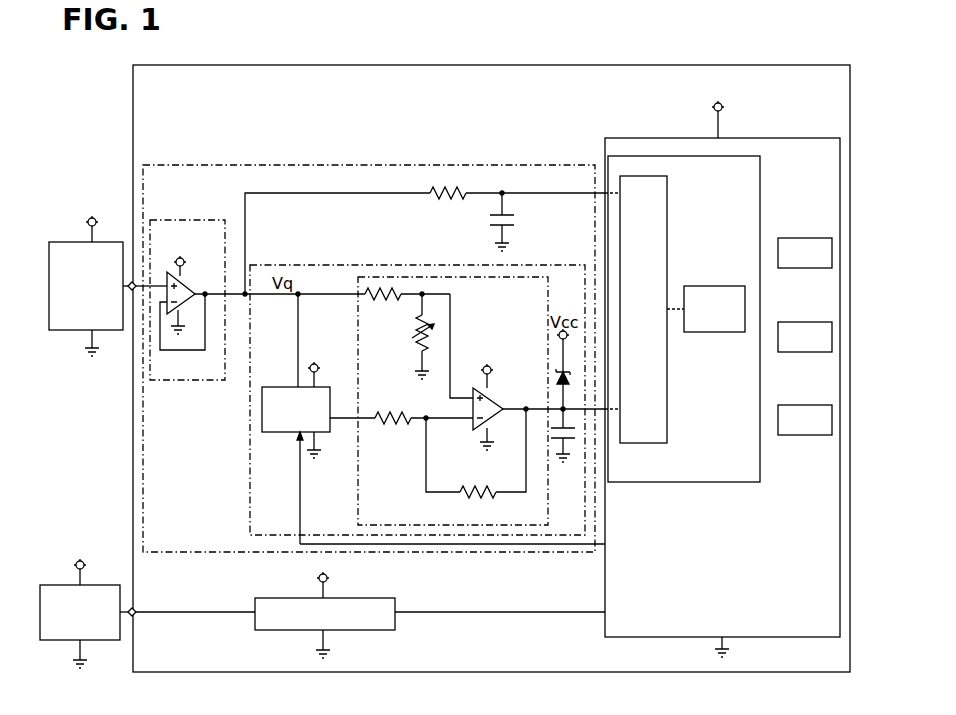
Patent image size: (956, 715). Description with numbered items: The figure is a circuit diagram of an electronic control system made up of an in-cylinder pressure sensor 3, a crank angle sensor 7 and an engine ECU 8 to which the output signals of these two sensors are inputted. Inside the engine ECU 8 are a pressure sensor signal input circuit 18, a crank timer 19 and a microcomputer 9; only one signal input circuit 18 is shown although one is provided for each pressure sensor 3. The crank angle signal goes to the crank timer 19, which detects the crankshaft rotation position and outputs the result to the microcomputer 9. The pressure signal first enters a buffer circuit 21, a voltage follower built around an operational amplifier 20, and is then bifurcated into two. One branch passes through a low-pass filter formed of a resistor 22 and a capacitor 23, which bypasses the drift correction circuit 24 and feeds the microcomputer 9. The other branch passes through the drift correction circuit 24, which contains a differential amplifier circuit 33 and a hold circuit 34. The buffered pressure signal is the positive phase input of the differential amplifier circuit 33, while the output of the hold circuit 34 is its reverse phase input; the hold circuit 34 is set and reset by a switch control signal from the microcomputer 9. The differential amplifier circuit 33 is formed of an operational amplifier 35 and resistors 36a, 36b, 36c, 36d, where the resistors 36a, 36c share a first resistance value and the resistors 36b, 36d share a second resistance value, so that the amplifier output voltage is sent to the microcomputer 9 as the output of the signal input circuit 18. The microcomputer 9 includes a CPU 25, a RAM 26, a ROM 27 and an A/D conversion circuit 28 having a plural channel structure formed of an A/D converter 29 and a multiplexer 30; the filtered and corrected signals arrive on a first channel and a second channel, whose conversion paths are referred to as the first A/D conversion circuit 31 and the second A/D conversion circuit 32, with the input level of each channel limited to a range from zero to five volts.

The pressure sensor 3 is at (72, 242).
The crank angle sensor 7 is at (60, 584).
The engine ECU 8 is at (477, 64).
The microcomputer 9 is at (775, 137).
The pressure sensor signal input circuit 18 is at (392, 162).
The crank timer 19 is at (386, 605).
The operational amplifier 20 is at (184, 284).
The buffer circuit 21 is at (176, 220).
The resistor 22 is at (445, 191).
The capacitor 23 is at (516, 223).
The drift correction circuit 24 is at (528, 262).
The CPU 25 is at (800, 238).
The RAM 26 is at (800, 322).
The ROM 27 is at (800, 405).
The A/D conversion circuit 28 is at (761, 192).
The A/D converter 29 is at (716, 284).
The multiplexer 30 is at (668, 193).
The first A/D conversion circuit 31 is at (698, 222).
The second A/D conversion circuit 32 is at (698, 386).
The differential amplifier circuit 33 is at (518, 278).
The hold circuit 34 is at (280, 387).
The operational amplifier 35 is at (491, 394).
The resistor 36a is at (360, 294).
The resistor 36b is at (442, 324).
The resistor 36c is at (388, 432).
The resistor 36d is at (472, 476).